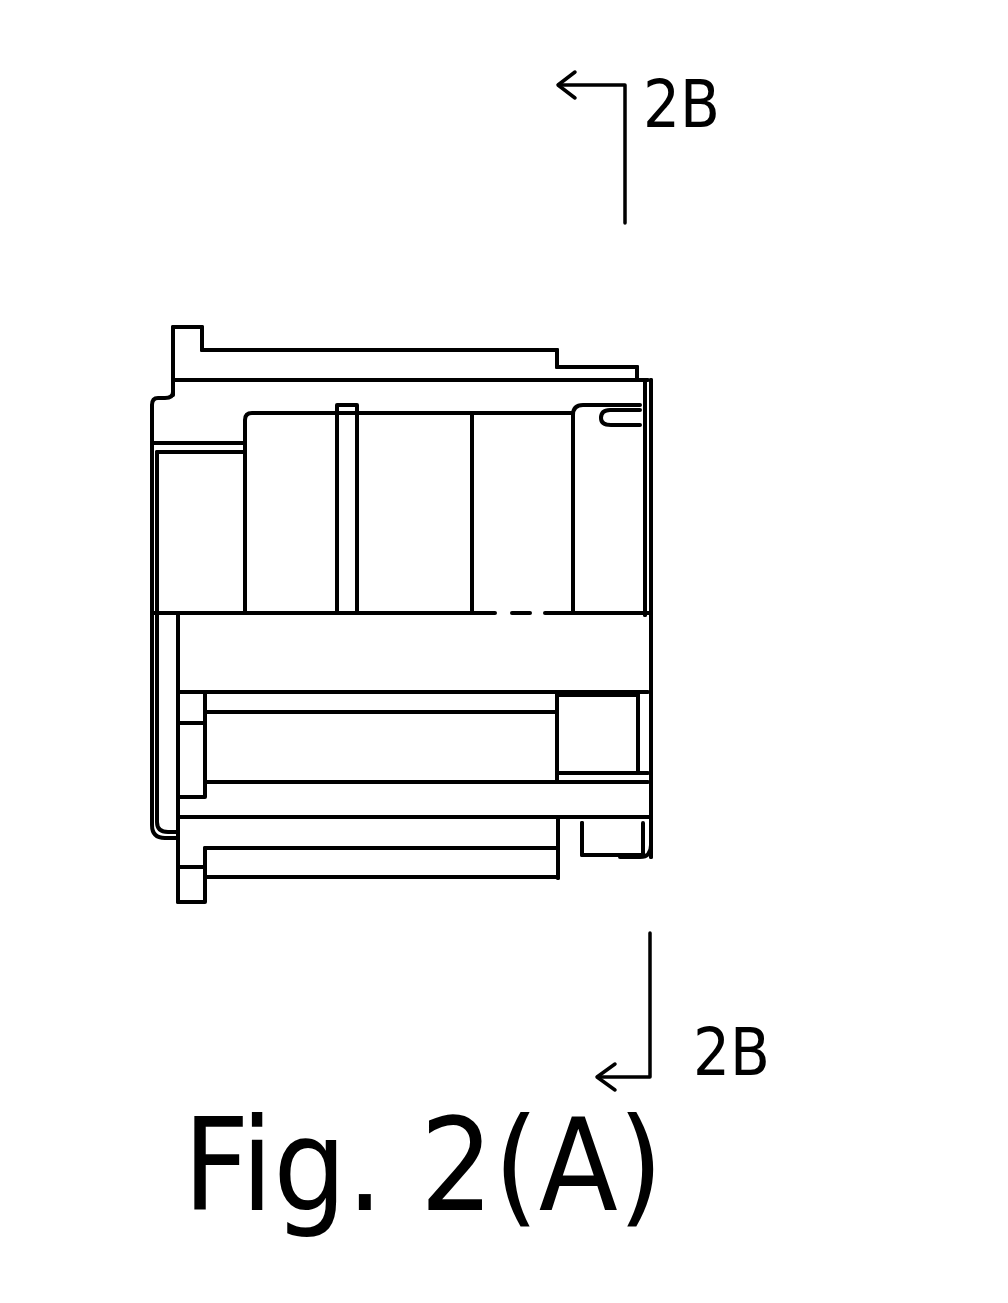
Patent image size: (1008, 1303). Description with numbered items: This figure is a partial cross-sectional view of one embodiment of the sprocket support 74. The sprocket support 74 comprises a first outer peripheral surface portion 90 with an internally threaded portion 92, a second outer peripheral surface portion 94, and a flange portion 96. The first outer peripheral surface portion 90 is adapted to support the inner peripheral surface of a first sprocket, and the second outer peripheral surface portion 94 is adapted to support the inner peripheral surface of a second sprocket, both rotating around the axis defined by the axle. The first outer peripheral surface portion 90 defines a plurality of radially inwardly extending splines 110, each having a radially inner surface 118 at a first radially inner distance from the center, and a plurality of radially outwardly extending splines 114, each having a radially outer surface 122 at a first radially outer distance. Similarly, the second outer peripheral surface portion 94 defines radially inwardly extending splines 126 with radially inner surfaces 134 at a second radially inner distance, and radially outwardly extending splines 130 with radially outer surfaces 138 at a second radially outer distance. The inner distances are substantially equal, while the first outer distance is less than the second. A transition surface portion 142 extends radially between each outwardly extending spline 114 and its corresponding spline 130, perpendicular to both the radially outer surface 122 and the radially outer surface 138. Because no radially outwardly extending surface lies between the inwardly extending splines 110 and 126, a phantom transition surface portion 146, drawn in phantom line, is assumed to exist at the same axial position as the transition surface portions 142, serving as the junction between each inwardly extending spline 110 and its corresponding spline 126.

The sprocket support 74 is at (282, 173).
The first outer peripheral surface portion 90 is at (590, 345).
The internally threaded portion 92 is at (655, 415).
The second outer peripheral surface portion 94 is at (343, 323).
The flange portion 96 is at (190, 325).
The radially inwardly extending splines 110 is at (623, 800).
The radially outwardly extending splines 114 is at (617, 727).
The radially inner surface 118 is at (633, 782).
The radially outer surface 122 is at (585, 717).
The radially inwardly extending splines 126 is at (245, 797).
The radially outwardly extending splines 130 is at (323, 745).
The radially inner surface 134 is at (278, 800).
The radially outer surface 138 is at (402, 748).
The transition surface portion 142 is at (567, 353).
The phantom transition surface portion 146 is at (575, 802).